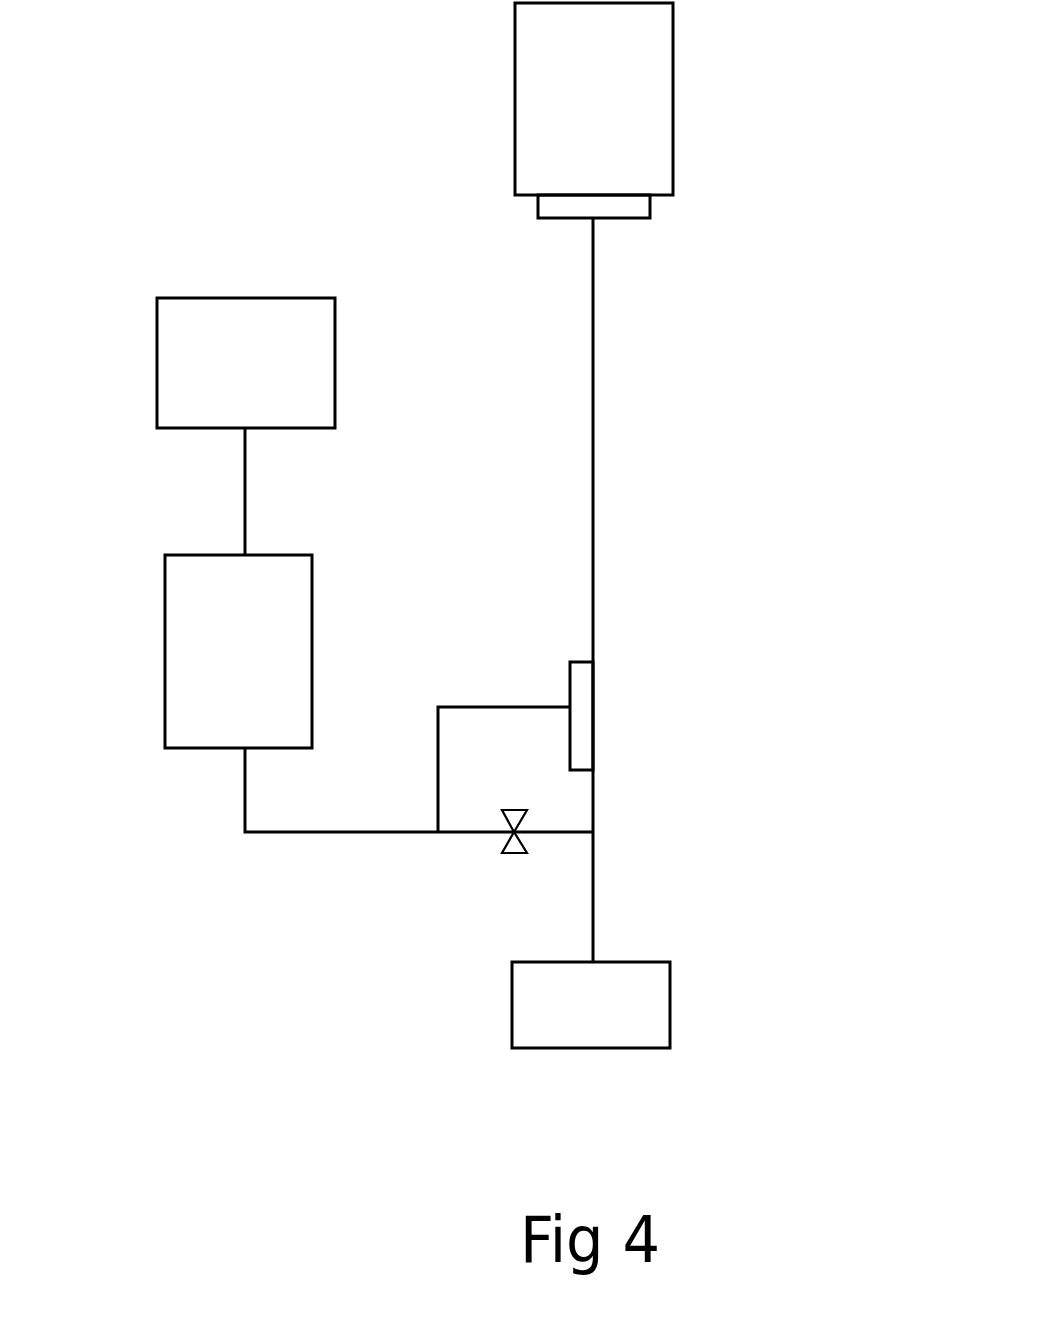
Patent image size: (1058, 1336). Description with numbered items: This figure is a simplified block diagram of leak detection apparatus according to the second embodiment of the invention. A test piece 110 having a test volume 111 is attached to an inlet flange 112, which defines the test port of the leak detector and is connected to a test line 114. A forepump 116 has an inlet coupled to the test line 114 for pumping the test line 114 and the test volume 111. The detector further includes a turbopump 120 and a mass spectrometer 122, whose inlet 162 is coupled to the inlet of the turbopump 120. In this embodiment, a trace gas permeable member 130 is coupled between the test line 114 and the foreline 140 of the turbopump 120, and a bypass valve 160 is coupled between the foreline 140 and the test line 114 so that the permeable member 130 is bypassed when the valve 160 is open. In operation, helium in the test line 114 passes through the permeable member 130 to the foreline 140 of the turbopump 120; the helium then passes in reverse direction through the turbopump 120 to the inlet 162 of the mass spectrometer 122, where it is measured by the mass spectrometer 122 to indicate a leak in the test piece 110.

The test piece 110 is at (484, 67).
The test volume 111 is at (594, 99).
The inlet flange 112 is at (686, 217).
The test line 114 is at (623, 383).
The forepump 116 is at (493, 1060).
The turbopump 120 is at (139, 638).
The mass spectrometer 122 is at (131, 354).
The trace gas permeable member 130 is at (618, 720).
The foreline 140 is at (302, 844).
The bypass valve 160 is at (480, 865).
The inlet 162 is at (219, 503).